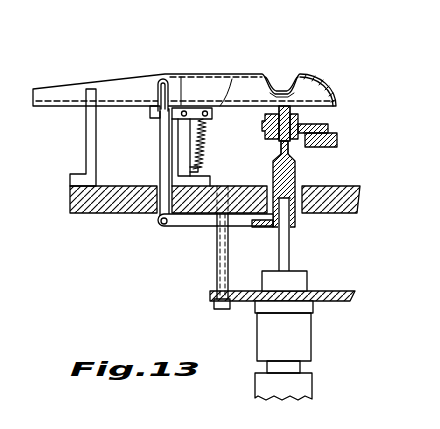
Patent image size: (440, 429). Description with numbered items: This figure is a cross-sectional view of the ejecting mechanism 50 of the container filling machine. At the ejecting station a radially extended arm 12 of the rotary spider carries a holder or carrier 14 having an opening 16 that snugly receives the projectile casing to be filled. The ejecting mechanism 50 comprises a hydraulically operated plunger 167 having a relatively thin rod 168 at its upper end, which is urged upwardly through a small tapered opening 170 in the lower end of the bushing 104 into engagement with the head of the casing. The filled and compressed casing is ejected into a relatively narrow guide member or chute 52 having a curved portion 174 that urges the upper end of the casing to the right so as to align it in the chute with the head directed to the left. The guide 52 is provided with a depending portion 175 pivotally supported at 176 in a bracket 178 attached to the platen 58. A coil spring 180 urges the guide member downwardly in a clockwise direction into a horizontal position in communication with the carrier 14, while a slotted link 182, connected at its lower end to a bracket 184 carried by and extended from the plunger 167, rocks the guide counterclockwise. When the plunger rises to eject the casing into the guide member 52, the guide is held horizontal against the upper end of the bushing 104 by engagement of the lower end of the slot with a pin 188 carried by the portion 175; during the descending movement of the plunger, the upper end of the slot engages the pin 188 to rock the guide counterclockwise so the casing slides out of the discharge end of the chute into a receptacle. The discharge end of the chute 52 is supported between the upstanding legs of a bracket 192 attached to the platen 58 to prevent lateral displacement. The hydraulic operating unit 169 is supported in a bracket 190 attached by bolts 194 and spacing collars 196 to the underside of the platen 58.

The radially extended arm 12 is at (322, 146).
The holder or carrier 14 is at (338, 128).
The opening 16 is at (337, 101).
The ejecting mechanism 50 is at (345, 64).
The guide member or chute 52 is at (232, 76).
The platen 58 is at (99, 213).
The bushing 104 is at (300, 119).
The hydraulically operated plunger 167 is at (290, 251).
The rod 168 is at (279, 143).
The hydraulic operating unit 169 is at (302, 339).
The tapered opening 170 is at (290, 138).
The curved portion 174 is at (291, 76).
The depending portion 175 is at (150, 114).
The pivot 176 is at (184, 107).
The bracket 178 is at (181, 152).
The coil spring 180 is at (205, 144).
The slotted link 182 is at (160, 140).
The bracket 184 is at (185, 224).
The pin 188 is at (157, 104).
The bracket 190 is at (342, 290).
The bracket 192 is at (86, 162).
The bolts 194 is at (215, 262).
The spacing collars 196 is at (214, 283).